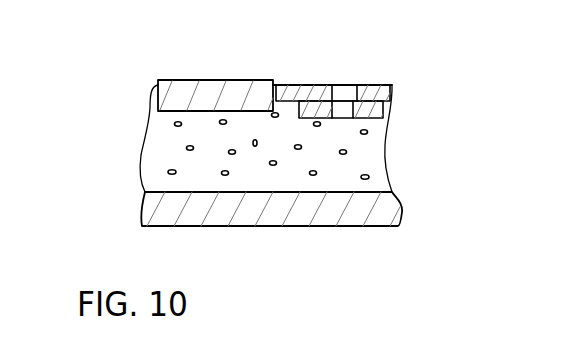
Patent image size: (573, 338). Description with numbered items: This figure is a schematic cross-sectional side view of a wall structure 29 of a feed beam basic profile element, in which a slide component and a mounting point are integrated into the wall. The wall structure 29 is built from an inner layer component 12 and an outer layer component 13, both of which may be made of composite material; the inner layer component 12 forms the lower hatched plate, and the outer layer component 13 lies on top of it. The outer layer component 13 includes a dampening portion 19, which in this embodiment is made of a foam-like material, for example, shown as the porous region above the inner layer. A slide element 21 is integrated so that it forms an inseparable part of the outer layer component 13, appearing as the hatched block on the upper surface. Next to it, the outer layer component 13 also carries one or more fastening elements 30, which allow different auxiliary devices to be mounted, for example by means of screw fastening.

The wall structure 29 is at (103, 105).
The slide element 21 is at (215, 80).
The fastening element 30 is at (317, 103).
The outer layer component 13 is at (157, 157).
The dampening portion 19 is at (362, 160).
The inner layer component 12 is at (322, 217).